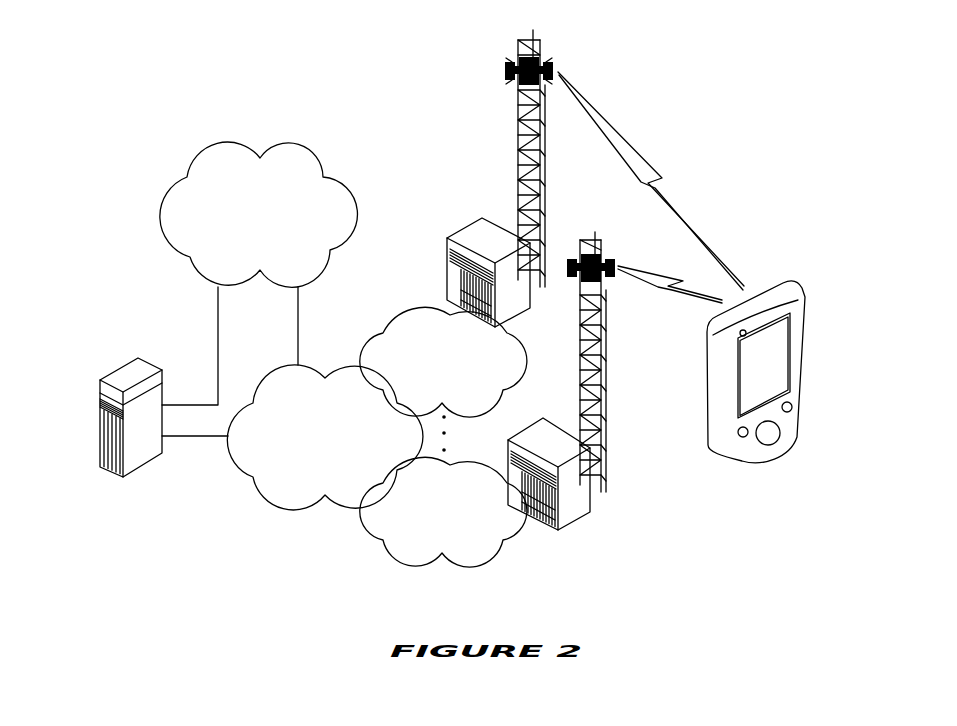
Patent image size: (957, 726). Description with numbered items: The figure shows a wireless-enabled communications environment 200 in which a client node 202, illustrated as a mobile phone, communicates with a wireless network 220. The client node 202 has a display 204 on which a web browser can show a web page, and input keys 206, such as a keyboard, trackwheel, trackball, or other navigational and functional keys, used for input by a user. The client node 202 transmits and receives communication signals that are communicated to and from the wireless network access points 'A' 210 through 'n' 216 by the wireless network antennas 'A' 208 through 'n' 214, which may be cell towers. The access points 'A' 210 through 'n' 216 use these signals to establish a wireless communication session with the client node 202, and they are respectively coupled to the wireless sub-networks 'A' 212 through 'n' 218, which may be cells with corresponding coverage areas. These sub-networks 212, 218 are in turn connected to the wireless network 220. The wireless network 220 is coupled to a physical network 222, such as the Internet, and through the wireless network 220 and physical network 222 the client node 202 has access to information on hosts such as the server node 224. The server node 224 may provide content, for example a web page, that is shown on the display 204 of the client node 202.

The wireless communication system 200 is at (300, 112).
The client node 202 is at (790, 412).
The display 204 is at (778, 350).
The input keys 206 is at (807, 357).
The wireless network antenna 'A' 208 is at (602, 447).
The wireless network access point 'A' 210 is at (558, 527).
The wireless sub-network 'A' 212 is at (443, 512).
The wireless network antenna 'n' 214 is at (519, 136).
The wireless network access point 'n' 216 is at (476, 228).
The wireless sub-network 'n' 218 is at (443, 362).
The wireless network 220 is at (325, 437).
The physical network 222 is at (259, 214).
The server node 224 is at (130, 478).